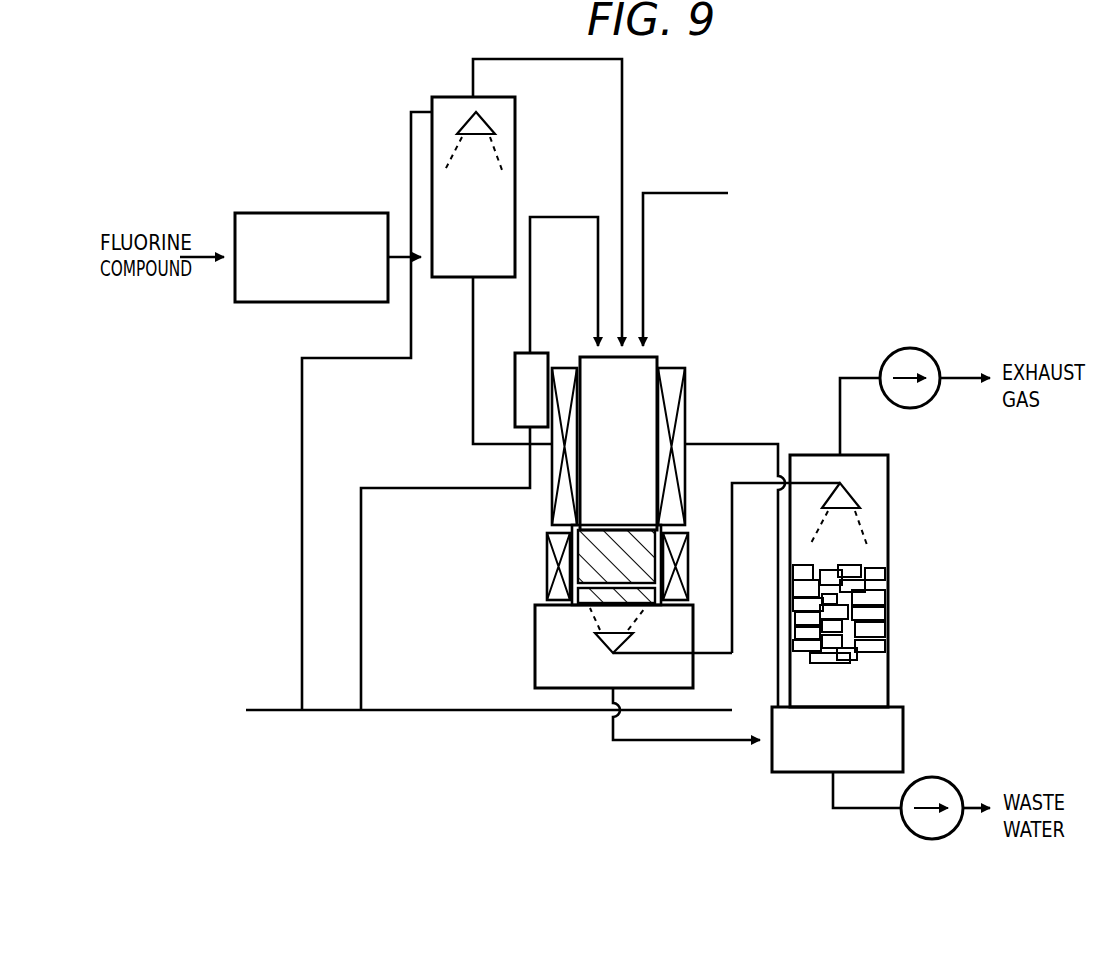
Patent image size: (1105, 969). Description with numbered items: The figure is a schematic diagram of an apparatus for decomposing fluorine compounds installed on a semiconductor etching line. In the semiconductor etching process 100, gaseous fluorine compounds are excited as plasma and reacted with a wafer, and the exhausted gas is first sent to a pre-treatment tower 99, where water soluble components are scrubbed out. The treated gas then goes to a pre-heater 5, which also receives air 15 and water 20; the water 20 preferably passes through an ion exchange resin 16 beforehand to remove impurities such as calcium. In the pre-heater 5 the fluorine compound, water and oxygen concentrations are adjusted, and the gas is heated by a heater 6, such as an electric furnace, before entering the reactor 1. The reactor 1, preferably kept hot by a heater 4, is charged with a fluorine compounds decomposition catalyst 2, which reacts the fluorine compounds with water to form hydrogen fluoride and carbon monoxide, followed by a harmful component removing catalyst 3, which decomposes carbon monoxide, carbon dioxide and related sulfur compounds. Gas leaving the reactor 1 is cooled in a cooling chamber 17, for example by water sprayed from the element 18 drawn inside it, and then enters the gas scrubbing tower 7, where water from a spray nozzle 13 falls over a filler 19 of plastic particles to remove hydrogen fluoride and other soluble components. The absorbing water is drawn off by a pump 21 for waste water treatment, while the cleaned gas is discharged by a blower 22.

The reactor 1 is at (550, 572).
The fluorine compounds decomposition catalyst 2 is at (597, 545).
The harmful component removing catalyst 3 is at (590, 606).
The heater 4 is at (690, 550).
The pre-heater 5 is at (660, 357).
The heater 6 is at (688, 432).
The gas scrubbing tower 7 is at (888, 542).
The spray nozzle 13 is at (860, 493).
The air 15 is at (724, 264).
The ion exchange resin 16 is at (515, 405).
The cooling chamber 17 is at (535, 672).
The cooling nozzle 18 is at (630, 633).
The filler 19 is at (875, 628).
The water 20 is at (436, 417).
The pump 21 is at (932, 839).
The blower 22 is at (910, 348).
The pre-treatment tower 99 is at (432, 140).
The semiconductor etching process 100 is at (305, 213).